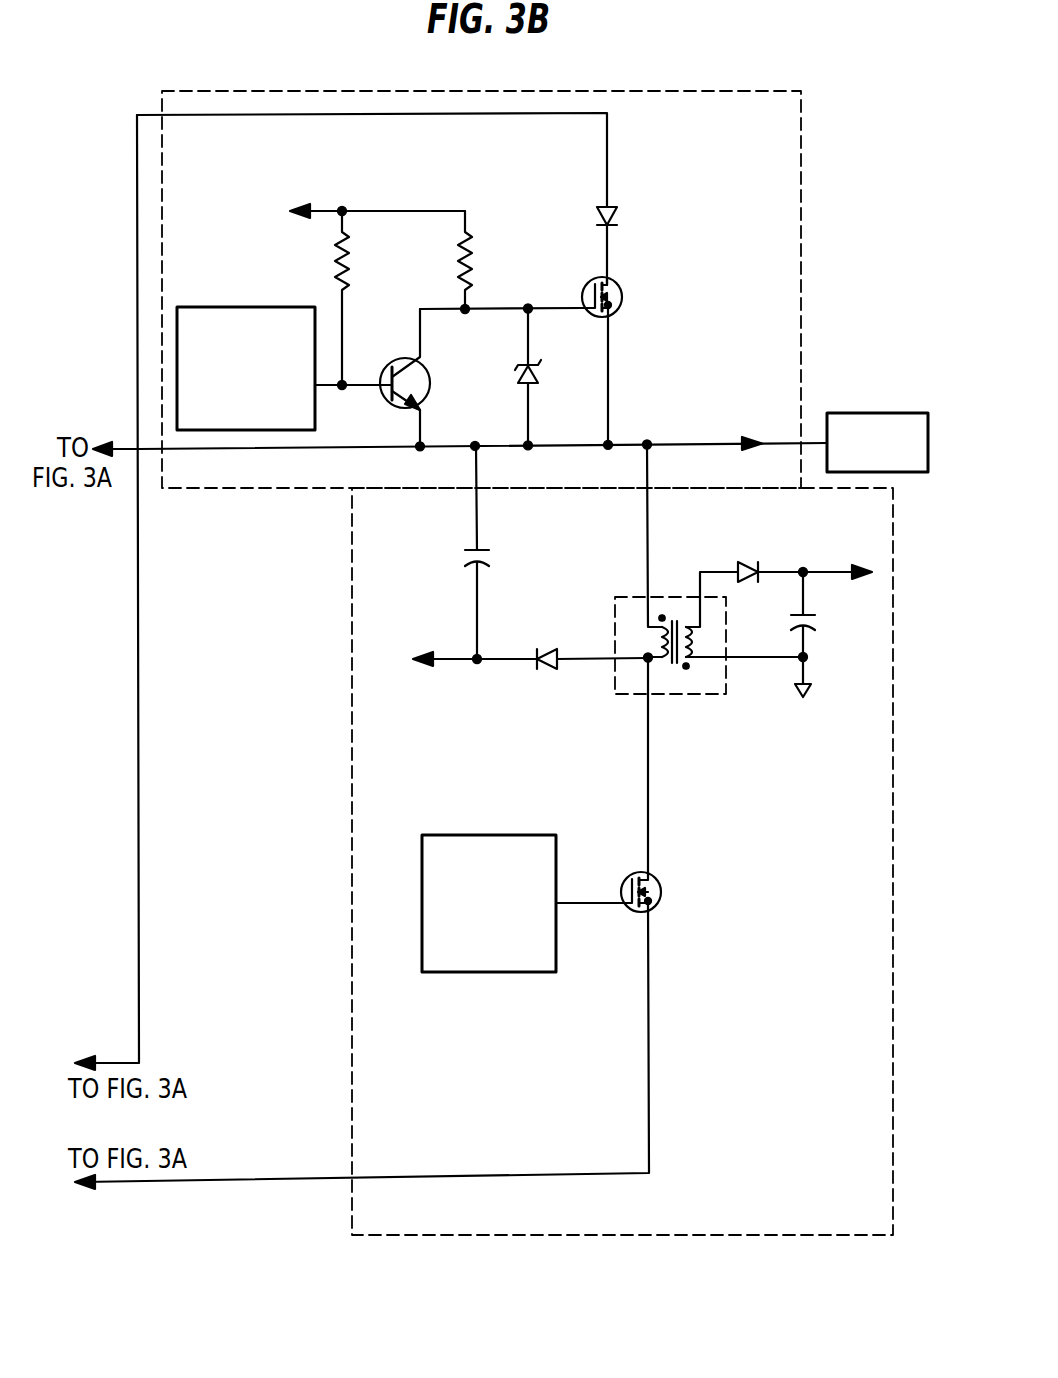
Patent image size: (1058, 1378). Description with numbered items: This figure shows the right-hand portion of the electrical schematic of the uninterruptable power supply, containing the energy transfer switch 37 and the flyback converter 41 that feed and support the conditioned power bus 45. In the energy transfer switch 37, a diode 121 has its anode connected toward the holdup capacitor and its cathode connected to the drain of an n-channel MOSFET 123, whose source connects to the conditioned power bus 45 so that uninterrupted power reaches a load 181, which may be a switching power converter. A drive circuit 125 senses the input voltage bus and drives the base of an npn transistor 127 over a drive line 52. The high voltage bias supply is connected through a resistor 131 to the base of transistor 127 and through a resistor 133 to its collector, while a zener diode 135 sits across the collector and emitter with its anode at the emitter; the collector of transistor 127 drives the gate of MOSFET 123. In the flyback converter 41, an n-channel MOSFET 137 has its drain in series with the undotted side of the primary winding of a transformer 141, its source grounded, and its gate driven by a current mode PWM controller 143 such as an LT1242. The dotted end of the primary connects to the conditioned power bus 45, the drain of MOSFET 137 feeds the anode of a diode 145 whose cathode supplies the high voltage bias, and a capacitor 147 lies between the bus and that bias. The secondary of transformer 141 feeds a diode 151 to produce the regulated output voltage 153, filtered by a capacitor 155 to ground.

The energy transfer switch 37 is at (802, 158).
The flyback converter 41 is at (893, 686).
The conditioned power bus 45 is at (713, 444).
The drive line 52 is at (372, 398).
The diode 121 is at (618, 220).
The n-channel MOSFET 123 is at (623, 300).
The drive circuit 125 is at (228, 305).
The npn transistor 127 is at (425, 366).
The resistor 131 is at (350, 272).
The resistor 133 is at (473, 272).
The zener diode 135 is at (540, 373).
The n-channel MOSFET 137 is at (662, 896).
The transformer 141 is at (667, 697).
The current mode PWM controller 143 is at (468, 833).
The diode 145 is at (548, 648).
The capacitor 147 is at (488, 549).
The diode 151 is at (742, 562).
The regulated output voltage 153 is at (820, 571).
The capacitor 155 is at (814, 614).
The load 181 is at (865, 412).